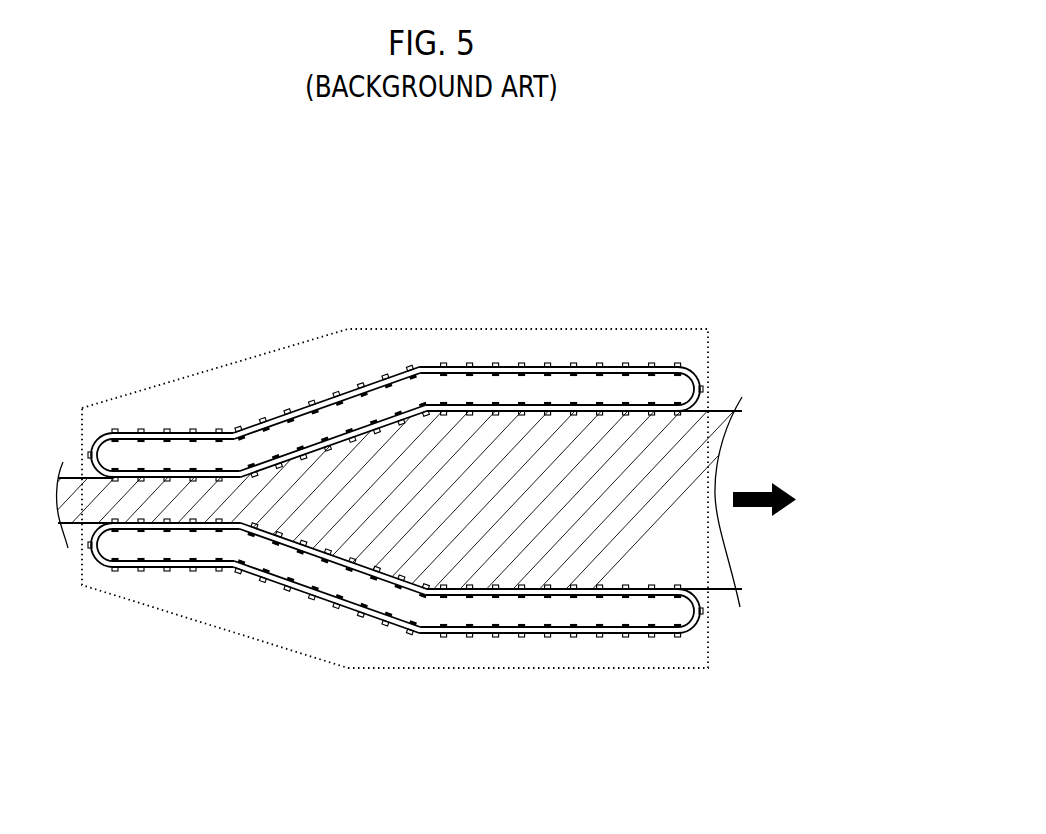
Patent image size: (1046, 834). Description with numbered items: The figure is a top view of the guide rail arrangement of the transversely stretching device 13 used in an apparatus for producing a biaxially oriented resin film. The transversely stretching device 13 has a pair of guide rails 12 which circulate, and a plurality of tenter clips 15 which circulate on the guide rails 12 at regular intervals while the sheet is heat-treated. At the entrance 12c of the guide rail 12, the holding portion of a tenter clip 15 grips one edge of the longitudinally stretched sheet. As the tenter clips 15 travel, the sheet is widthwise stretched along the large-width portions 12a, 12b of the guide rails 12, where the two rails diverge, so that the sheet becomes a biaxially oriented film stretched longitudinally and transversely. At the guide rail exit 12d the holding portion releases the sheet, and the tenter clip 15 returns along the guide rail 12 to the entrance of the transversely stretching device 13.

The guide rail 12 is at (483, 370).
The large-width portion 12a is at (352, 432).
The large-width portion 12b is at (365, 568).
The entrance 12c is at (92, 478).
The guide rail exit 12d is at (692, 412).
The transversely stretching device 13 is at (563, 285).
The tenter clip 15 is at (548, 590).